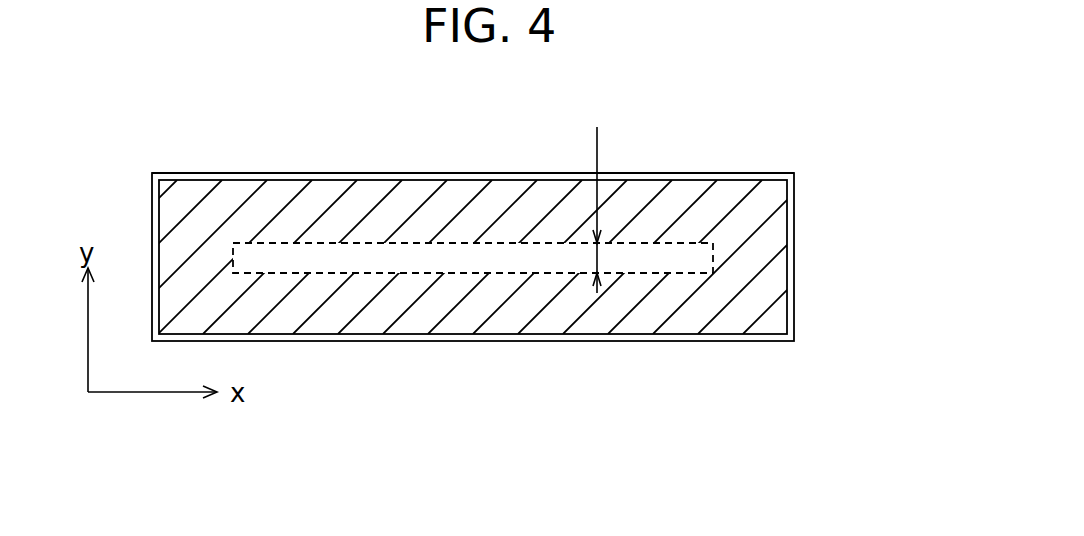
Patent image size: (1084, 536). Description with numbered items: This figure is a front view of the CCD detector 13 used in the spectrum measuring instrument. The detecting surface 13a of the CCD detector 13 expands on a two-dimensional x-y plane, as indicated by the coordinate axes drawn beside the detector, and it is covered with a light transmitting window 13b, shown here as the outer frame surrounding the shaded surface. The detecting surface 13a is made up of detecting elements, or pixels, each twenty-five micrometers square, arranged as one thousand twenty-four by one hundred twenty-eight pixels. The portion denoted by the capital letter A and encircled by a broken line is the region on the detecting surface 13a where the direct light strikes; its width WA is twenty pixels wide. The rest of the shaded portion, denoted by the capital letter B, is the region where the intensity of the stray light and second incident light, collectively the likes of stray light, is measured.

The CCD detector 13 is at (715, 339).
The detecting surface 13a is at (760, 287).
The light transmitting window 13b is at (698, 173).
The region where the direct light strikes A is at (465, 273).
The region where the likes of stray light is measured B is at (367, 318).
The width of the region A WA is at (623, 210).